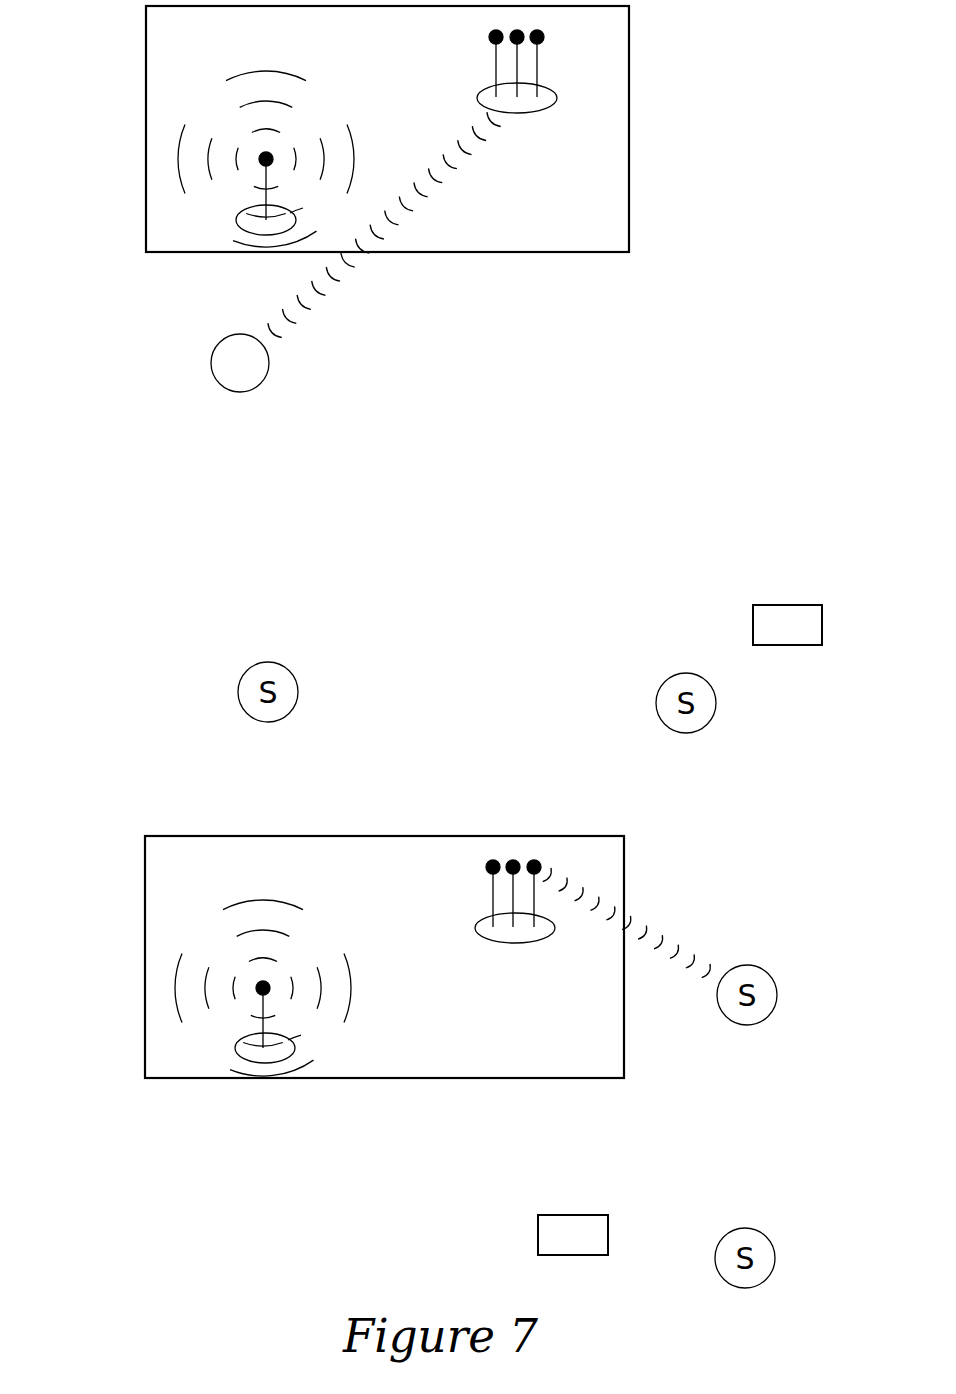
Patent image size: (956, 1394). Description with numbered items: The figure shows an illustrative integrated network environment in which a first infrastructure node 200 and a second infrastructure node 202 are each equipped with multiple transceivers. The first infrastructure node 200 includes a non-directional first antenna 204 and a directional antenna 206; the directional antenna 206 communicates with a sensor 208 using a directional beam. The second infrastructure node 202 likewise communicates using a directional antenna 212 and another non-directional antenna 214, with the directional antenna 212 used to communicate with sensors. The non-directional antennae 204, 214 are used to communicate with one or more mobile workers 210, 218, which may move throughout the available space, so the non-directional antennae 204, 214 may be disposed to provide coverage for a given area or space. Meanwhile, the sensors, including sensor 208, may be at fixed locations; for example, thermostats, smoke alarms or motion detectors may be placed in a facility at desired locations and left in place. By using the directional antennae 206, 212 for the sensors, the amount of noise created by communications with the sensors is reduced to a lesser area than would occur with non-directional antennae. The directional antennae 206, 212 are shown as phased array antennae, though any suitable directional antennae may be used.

The first infrastructure node 200 is at (146, 86).
The second infrastructure node 202 is at (145, 913).
The first antenna 204 is at (246, 206).
The directional antenna 206 is at (477, 99).
The sensor 208 is at (265, 380).
The mobile worker 210 is at (753, 623).
The directional antenna 212 is at (475, 927).
The antenna 214 is at (245, 1033).
The mobile worker 218 is at (538, 1232).